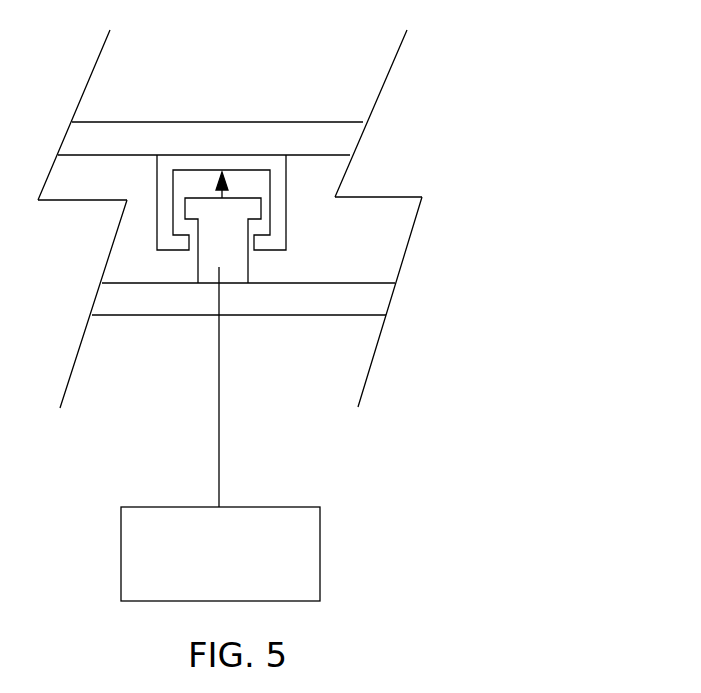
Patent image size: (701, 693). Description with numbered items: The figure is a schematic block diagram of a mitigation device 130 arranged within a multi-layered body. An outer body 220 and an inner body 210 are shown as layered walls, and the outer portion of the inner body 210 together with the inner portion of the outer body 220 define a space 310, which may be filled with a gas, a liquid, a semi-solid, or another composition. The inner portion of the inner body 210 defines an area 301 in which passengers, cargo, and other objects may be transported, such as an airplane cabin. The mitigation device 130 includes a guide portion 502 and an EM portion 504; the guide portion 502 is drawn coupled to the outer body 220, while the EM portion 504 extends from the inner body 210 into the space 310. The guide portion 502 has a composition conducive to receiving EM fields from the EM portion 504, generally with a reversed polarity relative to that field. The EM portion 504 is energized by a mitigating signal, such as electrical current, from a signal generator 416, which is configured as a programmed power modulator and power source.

The outer body 220 is at (212, 142).
The mitigation device 130 is at (208, 219).
The guide portion 502 is at (280, 163).
The EM portion 504 is at (207, 266).
The space 310 is at (373, 248).
The inner body 210 is at (310, 307).
The area 301 is at (338, 373).
The signal generator 416 is at (200, 594).